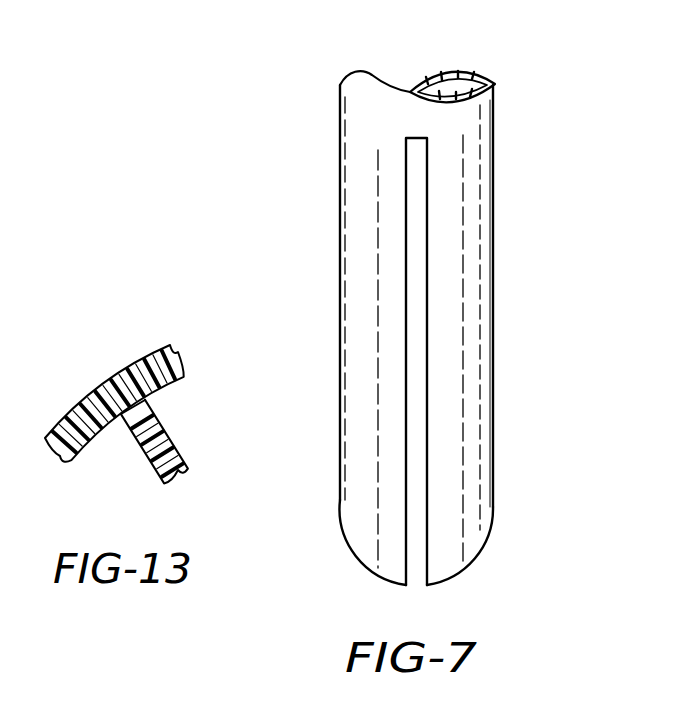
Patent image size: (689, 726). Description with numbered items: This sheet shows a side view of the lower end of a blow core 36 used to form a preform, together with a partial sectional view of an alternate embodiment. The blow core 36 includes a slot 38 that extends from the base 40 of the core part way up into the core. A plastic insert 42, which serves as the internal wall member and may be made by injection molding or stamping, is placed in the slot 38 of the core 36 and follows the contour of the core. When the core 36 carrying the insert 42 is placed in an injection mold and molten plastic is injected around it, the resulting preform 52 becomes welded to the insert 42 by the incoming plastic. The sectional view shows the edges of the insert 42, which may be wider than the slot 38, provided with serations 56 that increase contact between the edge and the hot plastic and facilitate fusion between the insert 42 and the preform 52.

In FIG. 7, the blow core 36 is at (321, 293).
In FIG. 7, the slot 38 is at (417, 222).
In FIG. 7, the base 40 is at (350, 540).
In FIG. 13, the plastic insert 42 is at (157, 434).
In FIG. 13, the preform 52 is at (93, 438).
In FIG. 13, the serations 56 is at (124, 400).